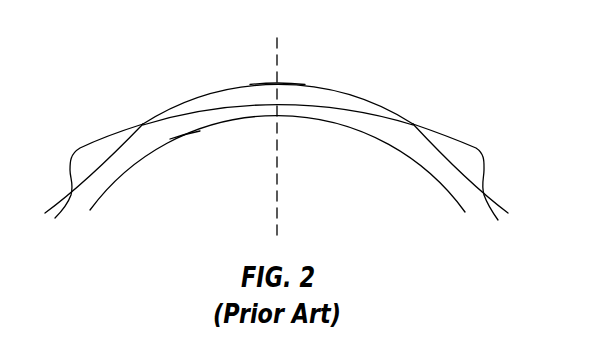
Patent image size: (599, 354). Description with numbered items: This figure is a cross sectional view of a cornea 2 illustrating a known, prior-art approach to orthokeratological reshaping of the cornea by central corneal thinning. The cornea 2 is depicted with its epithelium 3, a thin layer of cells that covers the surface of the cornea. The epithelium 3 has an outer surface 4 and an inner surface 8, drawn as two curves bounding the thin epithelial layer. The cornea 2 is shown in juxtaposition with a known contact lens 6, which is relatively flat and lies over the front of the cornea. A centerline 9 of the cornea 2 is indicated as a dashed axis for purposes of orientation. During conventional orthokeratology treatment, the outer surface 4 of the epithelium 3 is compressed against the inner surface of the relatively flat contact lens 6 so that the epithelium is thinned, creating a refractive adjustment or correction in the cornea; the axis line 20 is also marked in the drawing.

The cornea 2 is at (208, 82).
The epithelium 3 is at (122, 160).
The outer surface 4 is at (357, 93).
The contact lens 6 is at (390, 118).
The inner surface 8 is at (185, 137).
The centerline 9 is at (300, 83).
The optical axis 20 is at (278, 224).